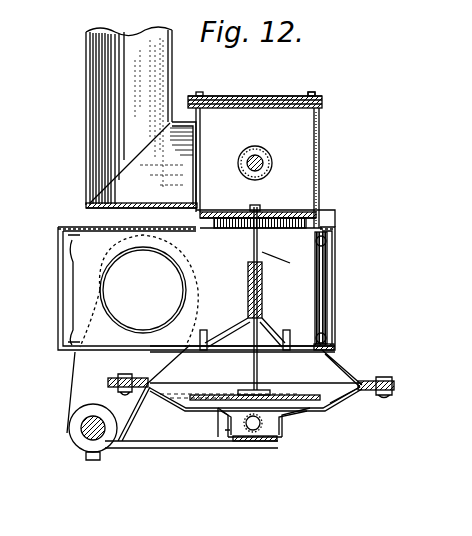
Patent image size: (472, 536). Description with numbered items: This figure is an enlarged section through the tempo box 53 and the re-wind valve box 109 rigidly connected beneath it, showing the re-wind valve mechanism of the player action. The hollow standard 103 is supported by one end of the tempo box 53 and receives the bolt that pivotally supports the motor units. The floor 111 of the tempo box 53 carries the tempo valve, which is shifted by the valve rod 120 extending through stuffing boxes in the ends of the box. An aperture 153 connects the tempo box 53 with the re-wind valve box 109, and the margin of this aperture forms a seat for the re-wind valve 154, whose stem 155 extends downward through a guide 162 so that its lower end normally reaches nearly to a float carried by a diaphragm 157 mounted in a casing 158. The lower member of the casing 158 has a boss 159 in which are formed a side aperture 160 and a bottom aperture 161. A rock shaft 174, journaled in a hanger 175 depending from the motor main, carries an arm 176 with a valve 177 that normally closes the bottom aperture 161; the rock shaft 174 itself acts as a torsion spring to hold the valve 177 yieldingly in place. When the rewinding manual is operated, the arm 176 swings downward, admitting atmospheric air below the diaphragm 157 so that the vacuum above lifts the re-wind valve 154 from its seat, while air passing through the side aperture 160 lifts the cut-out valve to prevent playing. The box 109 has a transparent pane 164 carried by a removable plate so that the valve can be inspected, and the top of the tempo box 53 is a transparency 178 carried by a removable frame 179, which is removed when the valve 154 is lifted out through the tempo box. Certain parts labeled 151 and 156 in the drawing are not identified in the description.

The hollow standard 103 is at (86, 92).
The re-wind valve box 109 is at (82, 236).
The floor of the tempo box 111 is at (186, 218).
The valve rod 120 is at (264, 160).
The bracket 151 is at (207, 330).
The aperture 153 is at (232, 232).
The re-wind valve 154 is at (283, 212).
The valve stem 155 is at (290, 263).
The plate 156 is at (270, 392).
The diaphragm 157 is at (330, 403).
The casing 158 is at (320, 410).
The boss 159 is at (283, 430).
The side aperture 160 is at (250, 428).
The bottom aperture 161 is at (262, 441).
The guide 162 is at (262, 299).
The transparent pane 164 is at (327, 300).
The rock shaft 174 is at (70, 428).
The hanger 175 is at (72, 385).
The arm 176 is at (165, 448).
The valve 177 is at (226, 430).
The transparency 178 is at (280, 96).
The removable frame 179 is at (322, 96).
The tempo box 53 is at (320, 165).